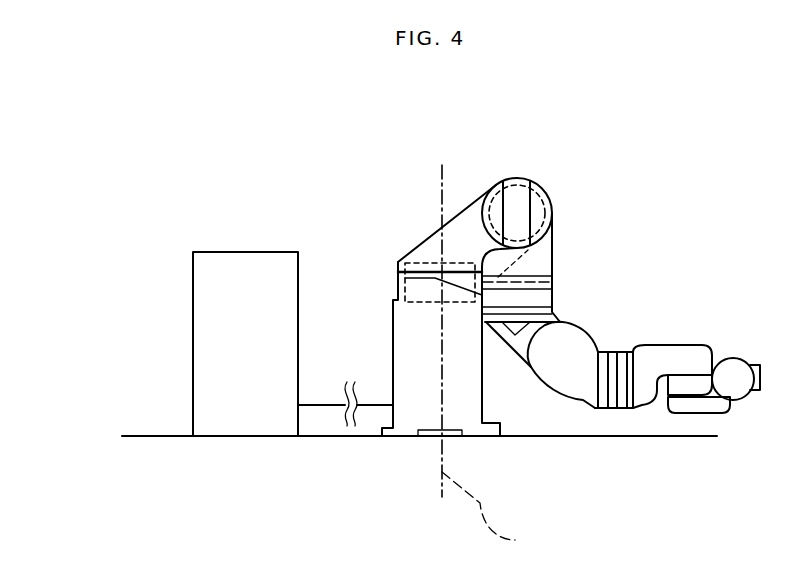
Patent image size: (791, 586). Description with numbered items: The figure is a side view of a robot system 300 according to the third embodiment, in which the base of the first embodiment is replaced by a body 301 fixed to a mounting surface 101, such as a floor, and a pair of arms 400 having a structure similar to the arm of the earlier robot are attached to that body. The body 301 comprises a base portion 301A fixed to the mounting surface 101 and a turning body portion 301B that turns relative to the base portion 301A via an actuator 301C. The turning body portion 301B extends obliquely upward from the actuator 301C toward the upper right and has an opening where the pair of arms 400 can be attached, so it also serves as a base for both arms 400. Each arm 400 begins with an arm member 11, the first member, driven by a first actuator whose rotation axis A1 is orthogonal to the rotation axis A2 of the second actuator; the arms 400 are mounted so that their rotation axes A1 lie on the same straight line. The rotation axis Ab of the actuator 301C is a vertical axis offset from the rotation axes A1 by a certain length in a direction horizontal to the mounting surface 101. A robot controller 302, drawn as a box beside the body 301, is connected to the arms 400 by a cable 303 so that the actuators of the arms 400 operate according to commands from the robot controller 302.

The robot system 300 is at (358, 165).
The body 301 is at (380, 312).
The base portion 301A is at (392, 378).
The turning body portion 301B is at (443, 222).
The actuator 301C is at (406, 260).
The robot controller 302 is at (229, 252).
The cable 303 is at (318, 408).
The mounting surface 101 is at (158, 436).
The arm member (first member) 11 is at (552, 250).
The arm 400 is at (658, 306).
The rotation axis A1 is at (555, 204).
The rotation axis A2 is at (518, 178).
The rotation axis Ab is at (500, 515).